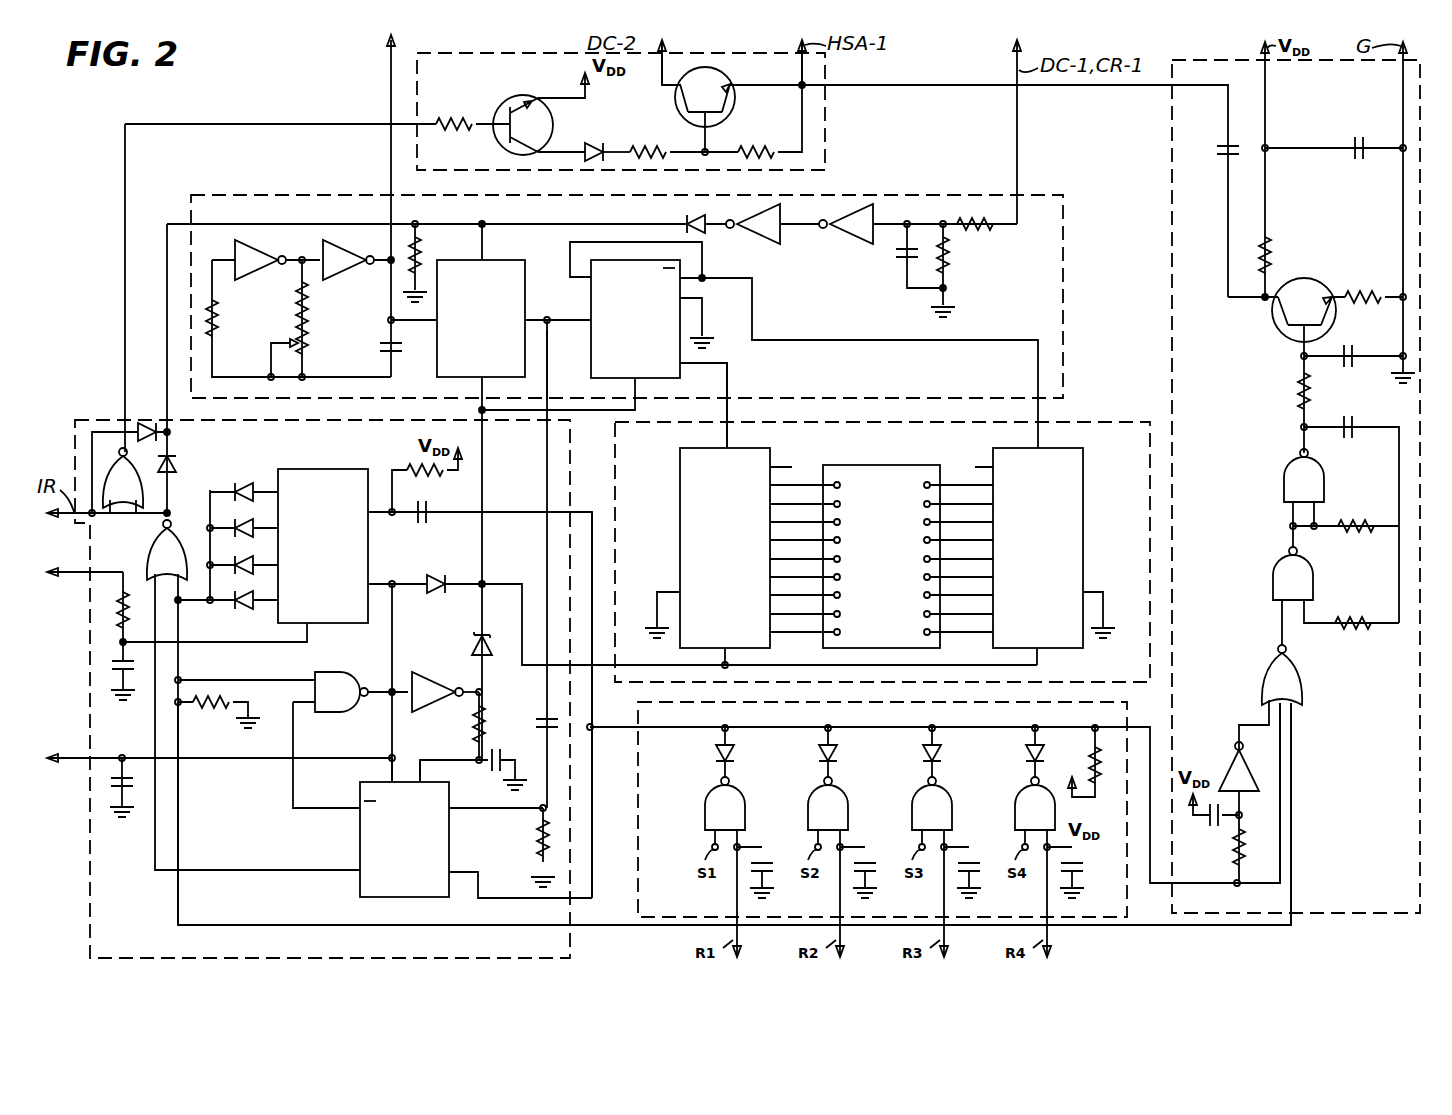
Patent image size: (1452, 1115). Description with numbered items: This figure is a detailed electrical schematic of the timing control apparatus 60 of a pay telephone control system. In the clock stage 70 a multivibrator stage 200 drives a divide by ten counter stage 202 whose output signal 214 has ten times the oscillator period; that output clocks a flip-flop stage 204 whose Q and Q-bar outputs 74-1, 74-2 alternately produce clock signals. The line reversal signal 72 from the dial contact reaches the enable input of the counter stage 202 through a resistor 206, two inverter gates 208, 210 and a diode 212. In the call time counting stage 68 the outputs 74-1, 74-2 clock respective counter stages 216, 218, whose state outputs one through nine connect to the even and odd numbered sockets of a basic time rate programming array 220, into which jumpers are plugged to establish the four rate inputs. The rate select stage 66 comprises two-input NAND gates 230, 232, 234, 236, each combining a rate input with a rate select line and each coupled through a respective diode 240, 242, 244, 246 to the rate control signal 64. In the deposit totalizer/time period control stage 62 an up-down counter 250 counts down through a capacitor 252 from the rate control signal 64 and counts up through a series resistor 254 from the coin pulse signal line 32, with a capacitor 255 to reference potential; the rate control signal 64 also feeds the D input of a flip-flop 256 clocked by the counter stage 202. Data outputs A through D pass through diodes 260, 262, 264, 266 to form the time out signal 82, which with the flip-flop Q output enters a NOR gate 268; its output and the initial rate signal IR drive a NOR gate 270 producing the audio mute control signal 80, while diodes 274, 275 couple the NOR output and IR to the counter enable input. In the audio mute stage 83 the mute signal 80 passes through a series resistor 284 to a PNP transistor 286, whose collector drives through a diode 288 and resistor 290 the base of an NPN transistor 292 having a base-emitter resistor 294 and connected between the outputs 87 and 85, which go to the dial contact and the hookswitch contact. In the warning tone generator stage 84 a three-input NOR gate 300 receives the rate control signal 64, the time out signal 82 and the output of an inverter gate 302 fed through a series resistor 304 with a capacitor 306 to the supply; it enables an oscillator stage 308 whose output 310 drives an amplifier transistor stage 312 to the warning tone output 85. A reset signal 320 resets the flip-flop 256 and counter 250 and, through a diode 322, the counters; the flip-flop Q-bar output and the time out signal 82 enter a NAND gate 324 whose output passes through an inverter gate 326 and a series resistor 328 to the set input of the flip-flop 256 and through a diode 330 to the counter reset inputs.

The timing control apparatus 60 is at (318, 112).
The deposit totalizer/time period control stage 62 is at (88, 833).
The rate control signal 64 is at (594, 775).
The rate select stage 66 is at (636, 813).
The call time counting stage 68 is at (1128, 406).
The clock stage 70 is at (1068, 233).
The line reversal signal 72 is at (1015, 53).
The clock signal output (Q output) 74-1 is at (729, 368).
The clock signal output (Q-bar output) 74-2 is at (752, 332).
The audio mute control signal 80 is at (125, 240).
The time out signal 82 is at (180, 852).
The audio mute stage 83 is at (827, 123).
The warning tone generator stage 84 is at (1322, 917).
The control output (warning tone output) 85 is at (800, 44).
The control output 87 is at (665, 43).
The coin pulse signal line 32 is at (75, 572).
The multivibrator stage 200 is at (298, 248).
The divide by ten counter stage 202 is at (478, 258).
The flip-flop stage 204 is at (590, 292).
The resistor 206 is at (975, 232).
The inverter gate 208 is at (833, 240).
The inverter gate 210 is at (782, 232).
The diode 212 is at (687, 216).
The output signal 214 is at (549, 353).
The counter stage 216 is at (680, 486).
The counter stage 218 is at (1083, 490).
The basic time rate programming array 220 is at (830, 648).
The two-input NAND gate 230 is at (705, 803).
The two-input NAND gate 232 is at (808, 803).
The two-input NAND gate 234 is at (912, 803).
The two-input NAND gate 236 is at (1015, 803).
The diode 240 is at (717, 752).
The diode 242 is at (820, 752).
The diode 244 is at (924, 752).
The diode 246 is at (1027, 752).
The up-down counter 250 is at (305, 469).
The capacitor 252 is at (430, 522).
The series resistor 254 is at (118, 612).
The capacitor 255 is at (118, 666).
The flip-flop 256 is at (360, 838).
The diode 260 is at (245, 482).
The diode 262 is at (235, 520).
The diode 264 is at (248, 570).
The diode 266 is at (255, 606).
The two-input NOR gate 268 is at (152, 537).
The two-input NOR gate 270 is at (112, 452).
The diode 274 is at (175, 457).
The diode 275 is at (143, 430).
The series resistor 284 is at (498, 138).
The PNP transistor 286 is at (498, 107).
The diode 288 is at (597, 142).
The series resistor 290 is at (642, 148).
The NPN transistor 292 is at (735, 106).
The resistor 294 is at (740, 148).
The three-input NOR gate 300 is at (1302, 675).
The inverter gate 302 is at (1225, 765).
The series resistor 304 is at (1235, 858).
The capacitor 306 is at (1214, 826).
The oscillator stage 308 is at (1268, 510).
The output of the oscillator stage 310 is at (1302, 427).
The amplifier transistor stage 312 is at (1338, 280).
The reset signal 320 is at (84, 758).
The diode 322 is at (435, 594).
The two-input NAND gate 324 is at (358, 712).
The inverter gate 326 is at (447, 712).
The series resistor 328 is at (482, 712).
The diode 330 is at (470, 645).